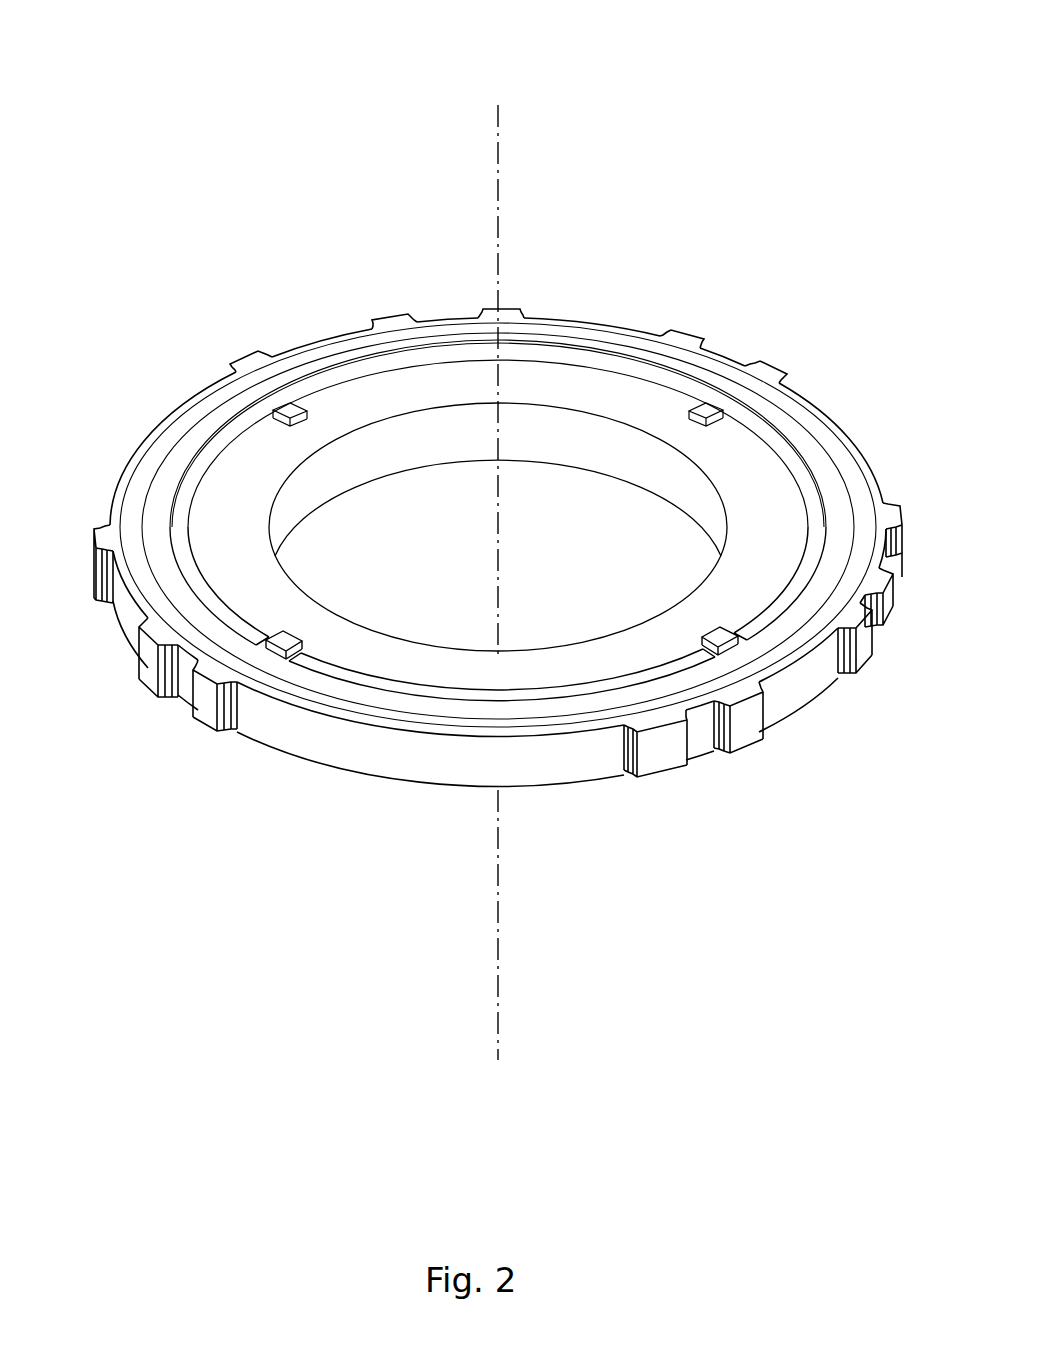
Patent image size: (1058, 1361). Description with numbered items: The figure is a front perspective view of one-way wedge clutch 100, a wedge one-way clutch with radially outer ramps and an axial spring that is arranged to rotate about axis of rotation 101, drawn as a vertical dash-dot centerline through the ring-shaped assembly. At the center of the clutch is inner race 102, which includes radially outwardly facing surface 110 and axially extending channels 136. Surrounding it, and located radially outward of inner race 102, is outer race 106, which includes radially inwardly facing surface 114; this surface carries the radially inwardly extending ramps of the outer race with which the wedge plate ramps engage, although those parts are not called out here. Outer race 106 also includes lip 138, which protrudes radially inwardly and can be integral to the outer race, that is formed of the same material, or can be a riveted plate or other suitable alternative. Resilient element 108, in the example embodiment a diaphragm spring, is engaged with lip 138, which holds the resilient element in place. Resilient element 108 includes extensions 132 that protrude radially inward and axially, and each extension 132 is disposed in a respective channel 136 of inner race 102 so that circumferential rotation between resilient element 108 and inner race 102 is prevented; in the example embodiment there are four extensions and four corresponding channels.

The one-way wedge clutch 100 is at (751, 58).
The axis of rotation 101 is at (493, 153).
The inner race 102 is at (668, 482).
The outer race 106 is at (683, 362).
The resilient element 108 is at (815, 482).
The radially outwardly facing surface 110 is at (357, 688).
The radially inwardly facing surface 114 is at (836, 548).
The extension 132 is at (278, 628).
The axially extending channel 136 is at (732, 623).
The lip 138 is at (338, 360).